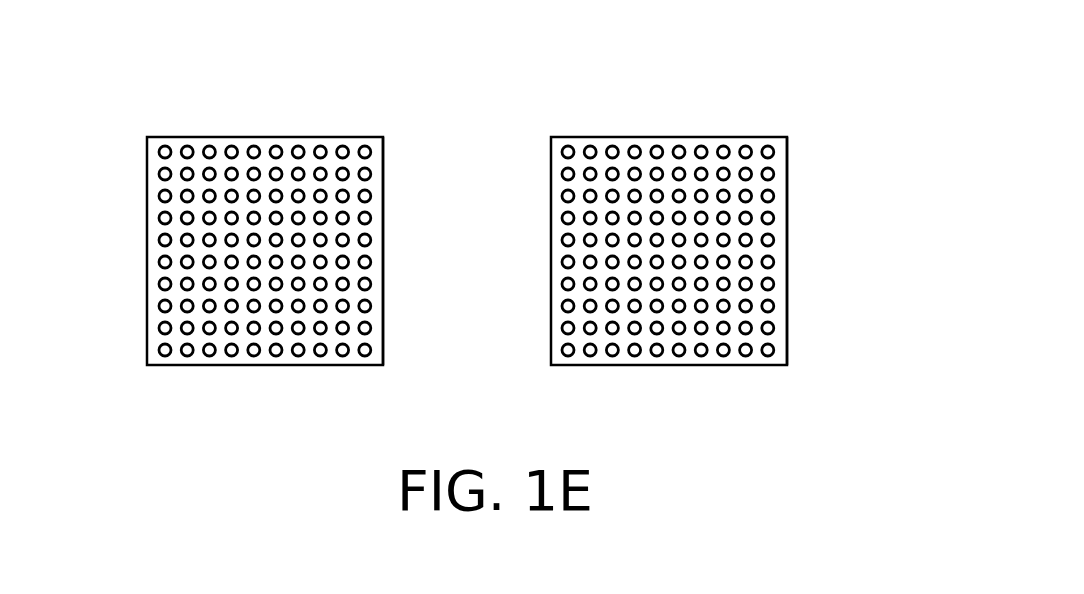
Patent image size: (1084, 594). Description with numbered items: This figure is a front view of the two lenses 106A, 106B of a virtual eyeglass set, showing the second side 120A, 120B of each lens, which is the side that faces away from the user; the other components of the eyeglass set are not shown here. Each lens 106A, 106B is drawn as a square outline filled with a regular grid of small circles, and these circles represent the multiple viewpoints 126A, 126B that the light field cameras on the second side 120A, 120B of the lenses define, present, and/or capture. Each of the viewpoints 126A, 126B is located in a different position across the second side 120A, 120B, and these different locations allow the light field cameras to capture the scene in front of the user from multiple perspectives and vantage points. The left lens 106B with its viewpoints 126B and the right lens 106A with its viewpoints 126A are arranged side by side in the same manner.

The lens 106B is at (147, 243).
The viewpoints 126B is at (265, 150).
The second side 120B is at (379, 273).
The lens 106A is at (787, 233).
The viewpoints 126A is at (670, 150).
The second side 120A is at (777, 330).